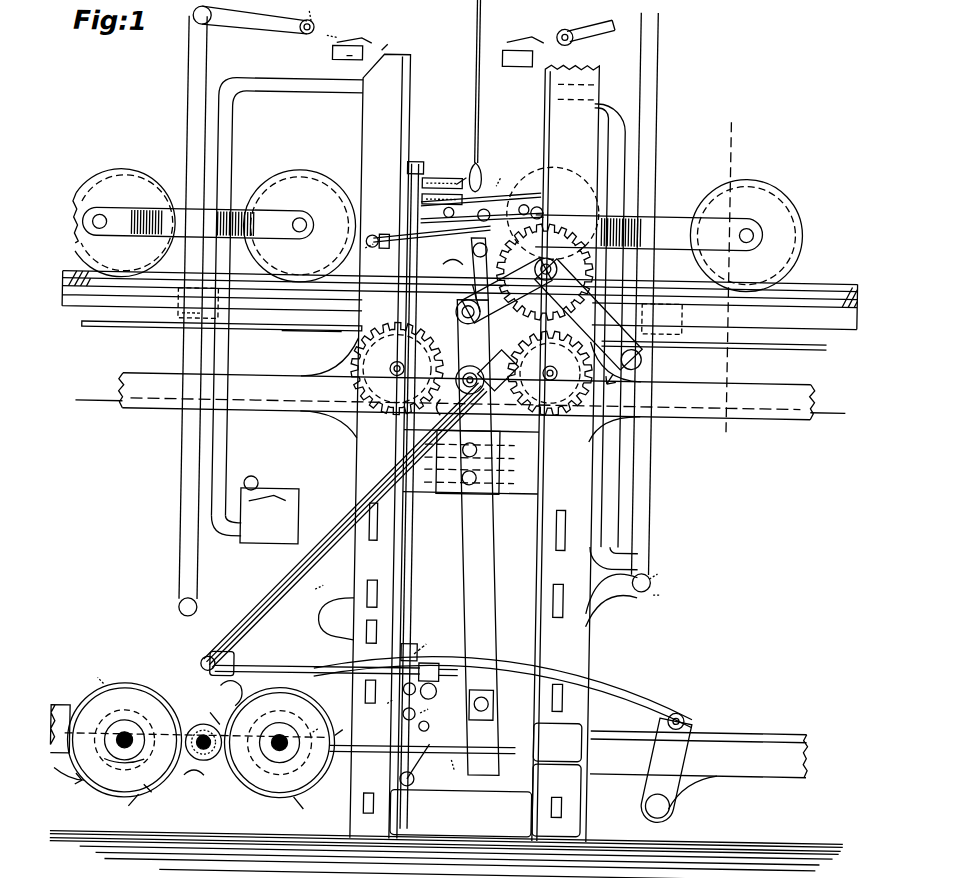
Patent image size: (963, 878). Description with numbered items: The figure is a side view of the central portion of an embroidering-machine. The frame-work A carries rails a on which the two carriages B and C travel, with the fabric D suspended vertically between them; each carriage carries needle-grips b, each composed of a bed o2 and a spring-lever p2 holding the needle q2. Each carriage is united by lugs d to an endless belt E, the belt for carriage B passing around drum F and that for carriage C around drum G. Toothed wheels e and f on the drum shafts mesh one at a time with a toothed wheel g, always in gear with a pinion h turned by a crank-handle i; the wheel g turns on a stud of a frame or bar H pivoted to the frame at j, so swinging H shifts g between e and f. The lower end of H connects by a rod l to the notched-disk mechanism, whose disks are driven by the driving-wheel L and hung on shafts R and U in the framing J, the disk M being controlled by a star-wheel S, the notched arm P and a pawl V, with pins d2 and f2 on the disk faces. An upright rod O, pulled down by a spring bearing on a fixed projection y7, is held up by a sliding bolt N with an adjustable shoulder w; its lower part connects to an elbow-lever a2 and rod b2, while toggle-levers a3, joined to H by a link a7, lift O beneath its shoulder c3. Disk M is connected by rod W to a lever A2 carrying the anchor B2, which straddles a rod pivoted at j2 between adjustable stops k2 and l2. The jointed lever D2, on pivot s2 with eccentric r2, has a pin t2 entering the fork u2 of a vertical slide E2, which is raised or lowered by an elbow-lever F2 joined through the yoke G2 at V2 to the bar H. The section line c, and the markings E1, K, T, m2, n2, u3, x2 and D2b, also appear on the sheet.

The frame-work A is at (470, 448).
The carriage B is at (214, 224).
The carriage C is at (668, 234).
The fabric D is at (483, 96).
The jointed lever D2 is at (429, 314).
The endless belt E is at (460, 396).
The bar E1 is at (531, 334).
The vertical slide E2 is at (477, 609).
The drum F is at (397, 369).
The elbow-lever F2 is at (698, 768).
The drum G is at (549, 372).
The yoke G2 is at (495, 691).
The frame or bar H is at (471, 536).
The block K is at (498, 362).
The disk M is at (116, 740).
The sliding bolt N is at (459, 173).
The upright rod O is at (431, 496).
The star-wheel S is at (214, 731).
The shaft T is at (194, 754).
The shaft R is at (280, 743).
The shaft U is at (124, 761).
The notched arm P is at (226, 687).
The pawl V is at (188, 751).
The driving-wheel L is at (198, 774).
The rod W is at (344, 529).
The adjustable shoulder w is at (369, 532).
The framing J is at (337, 728).
The connection point V2 is at (492, 705).
The rails a is at (460, 311).
The elbow-lever a2 is at (462, 760).
The toggle-levers a3 is at (431, 710).
The link a7 is at (459, 770).
The needle-grips b is at (393, 280).
The rod b2 is at (317, 660).
The section line c is at (452, 490).
The shoulder c3 is at (381, 700).
The lugs d is at (420, 324).
The pin d2 is at (181, 673).
The toothed wheel e is at (398, 379).
The toothed wheel f is at (556, 384).
The pin f2 is at (214, 810).
The toothed wheel g is at (500, 292).
The pinion h is at (548, 243).
The crank-handle i is at (588, 321).
The pivot j is at (439, 400).
The pivot j2 is at (428, 234).
The adjustable stop k2 is at (363, 253).
The rod l is at (422, 752).
The adjustable stop l2 is at (483, 201).
The pin m2 is at (323, 725).
The ratchet n2 is at (449, 257).
The bed o2 is at (410, 290).
The spring-lever p2 is at (420, 260).
The needle q2 is at (391, 42).
The eccentric r2 is at (289, 249).
The pivot s2 is at (410, 235).
The projecting pin t2 is at (417, 598).
The fork u2 is at (487, 576).
The pin u3 is at (505, 176).
The springs x2 is at (442, 184).
The fixed projection y7 is at (426, 640).
The lever A2 is at (472, 291).
The anchor B2 is at (487, 269).
The lever D2b is at (586, 32).